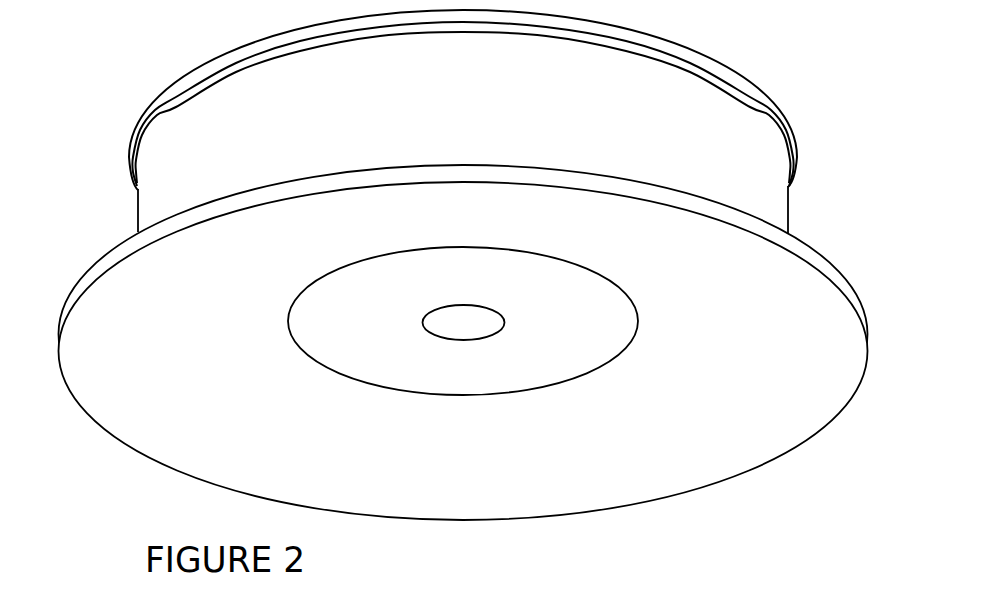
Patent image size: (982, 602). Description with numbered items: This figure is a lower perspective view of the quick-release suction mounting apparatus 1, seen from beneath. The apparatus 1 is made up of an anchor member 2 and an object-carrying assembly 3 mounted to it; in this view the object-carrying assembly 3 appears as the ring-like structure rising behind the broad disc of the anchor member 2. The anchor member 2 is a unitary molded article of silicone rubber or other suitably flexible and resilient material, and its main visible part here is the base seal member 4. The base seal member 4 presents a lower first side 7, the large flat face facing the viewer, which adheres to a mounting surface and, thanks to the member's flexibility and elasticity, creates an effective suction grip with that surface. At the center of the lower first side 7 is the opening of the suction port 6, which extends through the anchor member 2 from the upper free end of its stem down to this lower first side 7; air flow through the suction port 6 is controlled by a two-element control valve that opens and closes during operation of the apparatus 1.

The quick-release suction mounting apparatus 1 is at (485, 265).
The anchor member 2 is at (850, 219).
The object-carrying assembly 3 is at (840, 134).
The base seal member 4 is at (874, 261).
The suction port 6 is at (462, 322).
The lower first side 7 is at (491, 351).